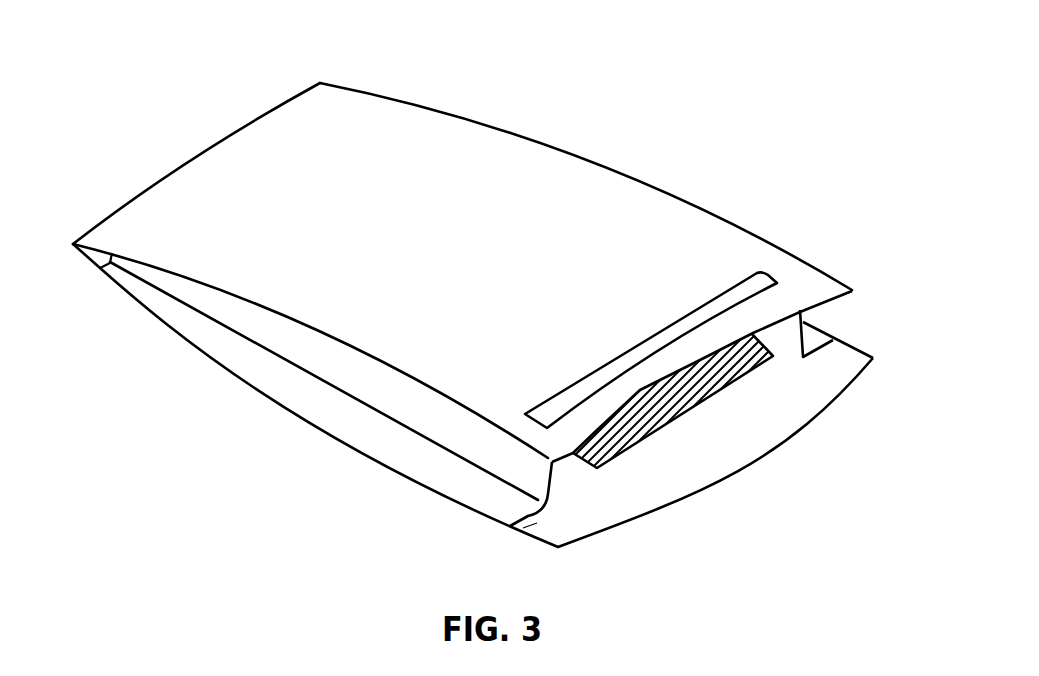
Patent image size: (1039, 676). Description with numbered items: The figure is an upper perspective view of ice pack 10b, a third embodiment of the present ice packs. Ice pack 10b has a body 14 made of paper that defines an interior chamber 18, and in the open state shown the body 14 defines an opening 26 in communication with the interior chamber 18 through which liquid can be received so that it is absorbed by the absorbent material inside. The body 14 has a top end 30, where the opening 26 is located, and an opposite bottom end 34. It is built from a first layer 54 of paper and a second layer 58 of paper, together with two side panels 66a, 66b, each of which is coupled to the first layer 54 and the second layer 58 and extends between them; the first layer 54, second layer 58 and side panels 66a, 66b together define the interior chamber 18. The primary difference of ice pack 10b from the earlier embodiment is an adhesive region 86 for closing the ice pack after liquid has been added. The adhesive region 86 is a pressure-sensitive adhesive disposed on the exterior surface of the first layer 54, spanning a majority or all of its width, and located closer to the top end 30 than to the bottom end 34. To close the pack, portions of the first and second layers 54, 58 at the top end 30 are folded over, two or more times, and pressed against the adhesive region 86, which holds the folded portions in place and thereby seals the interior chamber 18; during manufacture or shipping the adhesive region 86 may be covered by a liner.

The ice pack 10b is at (101, 49).
The body 14 is at (428, 135).
The interior chamber 18 is at (565, 483).
The opening 26 is at (784, 350).
The top end 30 is at (687, 500).
The bottom end 34 is at (142, 190).
The first layer 54 is at (685, 232).
The second layer 58 is at (535, 523).
The side panel 66a is at (813, 325).
The side panel 66b is at (237, 317).
The adhesive region 86 is at (742, 285).